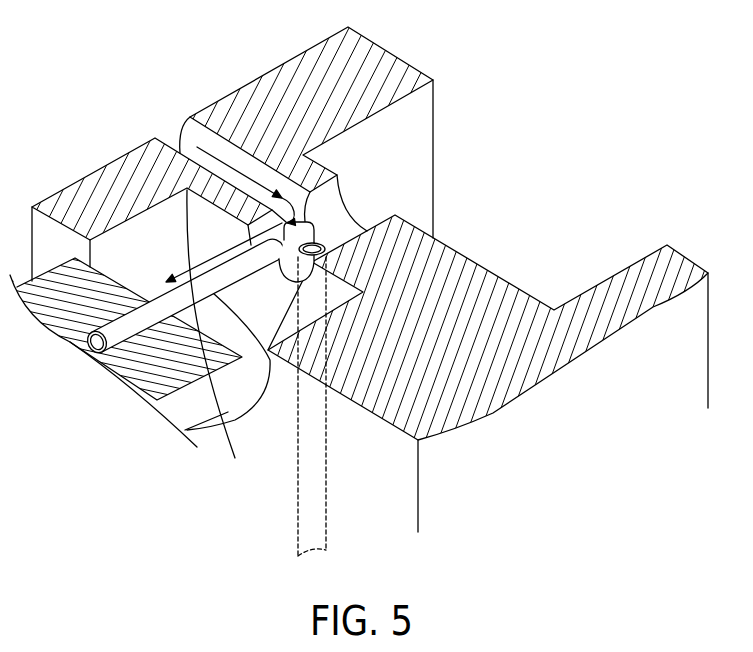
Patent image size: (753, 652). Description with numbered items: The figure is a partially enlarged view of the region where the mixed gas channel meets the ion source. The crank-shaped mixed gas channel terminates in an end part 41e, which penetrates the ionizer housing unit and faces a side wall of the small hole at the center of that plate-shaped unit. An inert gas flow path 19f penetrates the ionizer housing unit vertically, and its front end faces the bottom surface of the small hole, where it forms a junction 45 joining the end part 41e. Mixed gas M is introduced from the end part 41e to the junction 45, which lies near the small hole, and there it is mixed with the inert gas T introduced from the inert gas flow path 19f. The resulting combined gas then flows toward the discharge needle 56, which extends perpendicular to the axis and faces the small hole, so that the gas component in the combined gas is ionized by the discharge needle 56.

The end part 41e is at (342, 200).
The junction 45 is at (320, 243).
The discharge needle 56 is at (217, 341).
The inert gas flow path 19f is at (318, 523).
The mixed gas M is at (228, 168).
The inert gas T is at (300, 198).